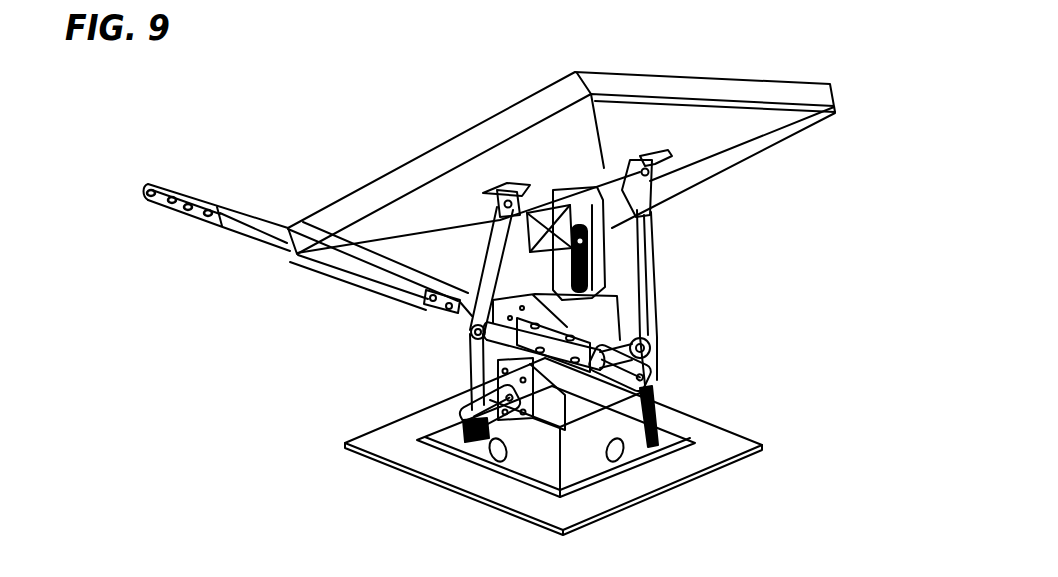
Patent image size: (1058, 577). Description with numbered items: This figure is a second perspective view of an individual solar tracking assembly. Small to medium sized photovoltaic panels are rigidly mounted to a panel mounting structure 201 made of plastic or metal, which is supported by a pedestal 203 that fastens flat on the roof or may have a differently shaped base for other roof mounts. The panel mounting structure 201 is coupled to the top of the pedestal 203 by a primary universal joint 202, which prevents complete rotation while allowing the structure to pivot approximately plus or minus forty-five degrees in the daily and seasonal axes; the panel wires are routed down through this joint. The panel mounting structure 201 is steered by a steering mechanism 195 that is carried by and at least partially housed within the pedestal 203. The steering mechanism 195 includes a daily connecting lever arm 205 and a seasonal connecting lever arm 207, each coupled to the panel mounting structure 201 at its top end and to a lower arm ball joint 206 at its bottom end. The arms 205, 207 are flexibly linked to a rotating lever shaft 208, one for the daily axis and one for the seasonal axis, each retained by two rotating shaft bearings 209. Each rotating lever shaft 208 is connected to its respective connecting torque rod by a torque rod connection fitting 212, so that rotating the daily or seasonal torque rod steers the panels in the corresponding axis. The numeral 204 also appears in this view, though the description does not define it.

The steering mechanism 195 is at (672, 285).
The panel mounting structure 201 is at (443, 158).
The primary universal joint 202 is at (653, 257).
The pedestal 203 is at (643, 478).
The hinge bracket 204 is at (652, 181).
The daily connecting lever arm 205 is at (468, 310).
The lower arm ball joint 206 is at (652, 348).
The seasonal connecting lever arm 207 is at (652, 308).
The rotating lever shaft 208 is at (655, 380).
The rotating shaft bearing 209 is at (515, 402).
The torque rod connection fitting 212 is at (455, 297).